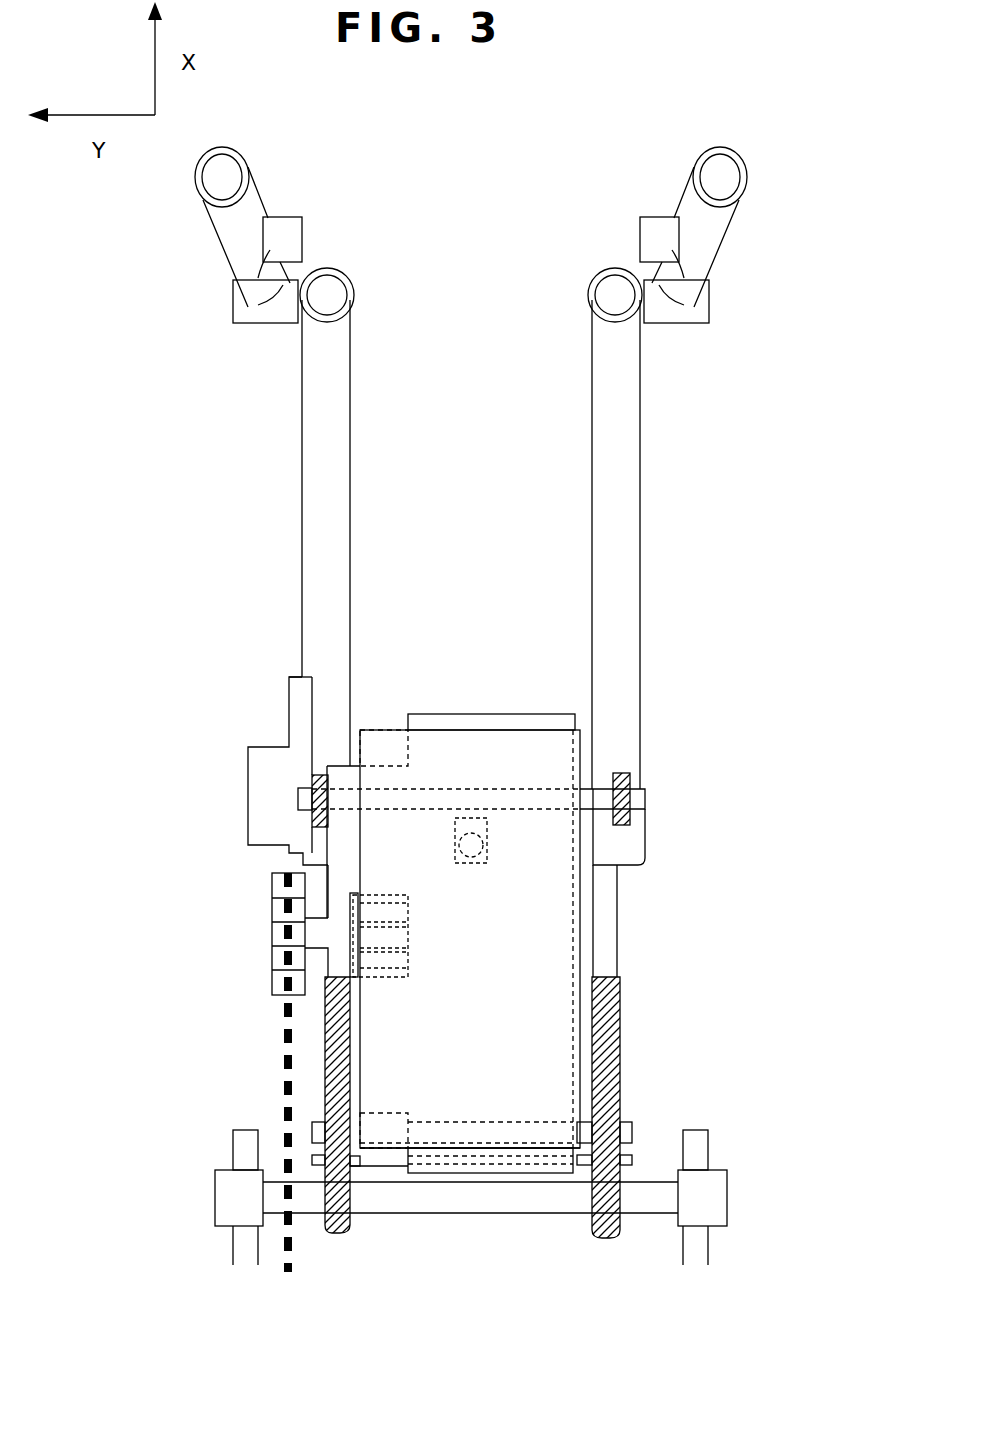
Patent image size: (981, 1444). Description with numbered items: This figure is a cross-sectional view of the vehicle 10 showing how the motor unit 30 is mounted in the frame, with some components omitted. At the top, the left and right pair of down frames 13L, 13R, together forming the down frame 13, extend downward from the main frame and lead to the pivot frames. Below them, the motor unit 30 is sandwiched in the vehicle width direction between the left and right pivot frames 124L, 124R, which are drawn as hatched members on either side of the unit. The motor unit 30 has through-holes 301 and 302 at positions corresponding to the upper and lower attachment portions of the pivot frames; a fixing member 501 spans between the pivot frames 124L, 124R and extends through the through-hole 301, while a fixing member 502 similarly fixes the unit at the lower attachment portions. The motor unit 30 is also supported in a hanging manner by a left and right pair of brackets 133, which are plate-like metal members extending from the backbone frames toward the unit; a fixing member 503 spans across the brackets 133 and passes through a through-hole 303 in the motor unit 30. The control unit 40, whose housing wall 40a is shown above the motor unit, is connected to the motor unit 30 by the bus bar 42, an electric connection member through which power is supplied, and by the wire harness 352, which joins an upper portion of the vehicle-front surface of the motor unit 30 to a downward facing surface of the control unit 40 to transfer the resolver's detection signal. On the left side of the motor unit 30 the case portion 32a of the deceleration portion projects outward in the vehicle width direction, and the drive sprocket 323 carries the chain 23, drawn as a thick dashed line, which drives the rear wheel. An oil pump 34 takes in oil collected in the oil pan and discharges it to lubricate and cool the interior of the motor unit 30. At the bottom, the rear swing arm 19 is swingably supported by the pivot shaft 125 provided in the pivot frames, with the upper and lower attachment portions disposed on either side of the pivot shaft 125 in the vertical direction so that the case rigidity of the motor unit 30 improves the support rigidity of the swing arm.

The printing apparatus 10 is at (777, 102).
The down frame 13 is at (276, 371).
The left down frame 13L is at (300, 437).
The right down frame 13R is at (645, 372).
The rear swing arm 19 is at (233, 1150).
The chain 23 is at (286, 1045).
The motor unit 30 is at (268, 713).
The case portion 32a is at (302, 865).
The oil pump 34 is at (298, 797).
The control unit 40 is at (596, 836).
The housing wall 40a is at (524, 730).
The bus bar 42 is at (408, 937).
The left pivot frame 124L is at (326, 1092).
The right pivot frame 124R is at (620, 1082).
The pivot shaft 125 is at (215, 1195).
The bracket 133 is at (310, 778).
The through-hole 301 is at (425, 1150).
The through-hole 302 is at (495, 1175).
The through-hole 303 is at (377, 766).
The drive sprocket 323 is at (272, 930).
The wire harness 352 is at (452, 818).
The fixing member 501 is at (592, 1170).
The fixing member 502 is at (385, 1172).
The fixing member 503 is at (598, 790).